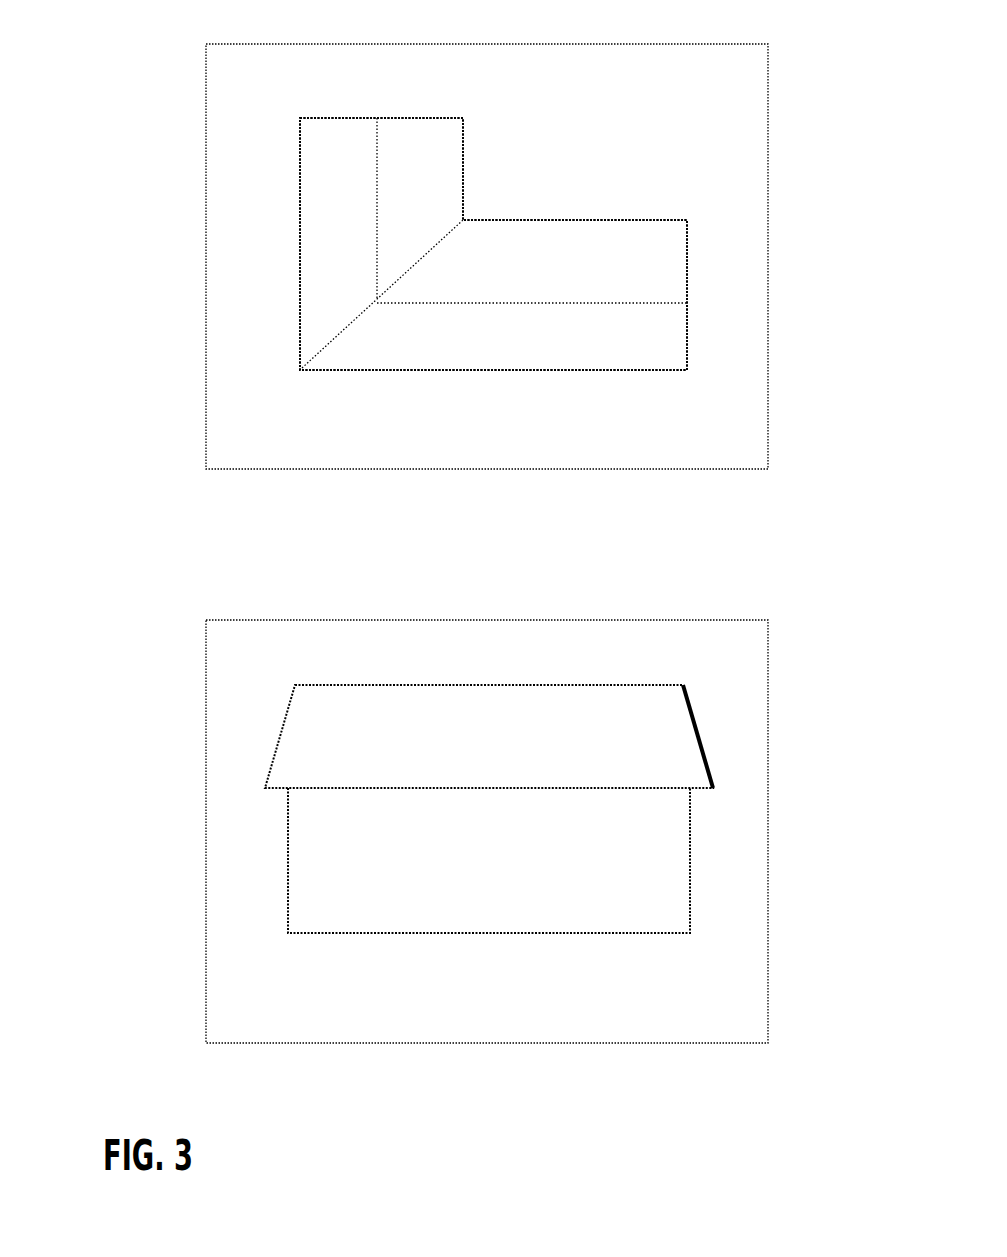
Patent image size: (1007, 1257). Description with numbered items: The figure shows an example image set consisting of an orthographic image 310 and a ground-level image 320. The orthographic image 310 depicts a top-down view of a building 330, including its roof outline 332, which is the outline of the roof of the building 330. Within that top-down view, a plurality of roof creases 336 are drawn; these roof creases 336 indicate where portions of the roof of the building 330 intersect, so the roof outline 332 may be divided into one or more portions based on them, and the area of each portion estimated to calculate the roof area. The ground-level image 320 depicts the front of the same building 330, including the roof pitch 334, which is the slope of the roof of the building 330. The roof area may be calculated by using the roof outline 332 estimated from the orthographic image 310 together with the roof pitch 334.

The orthographic image 310 is at (492, 31).
The ground-level image 320 is at (482, 597).
The building 330 is at (675, 913).
The roof outline 332 is at (704, 273).
The roof pitch 334 is at (718, 731).
The roof creases 336 is at (337, 297).